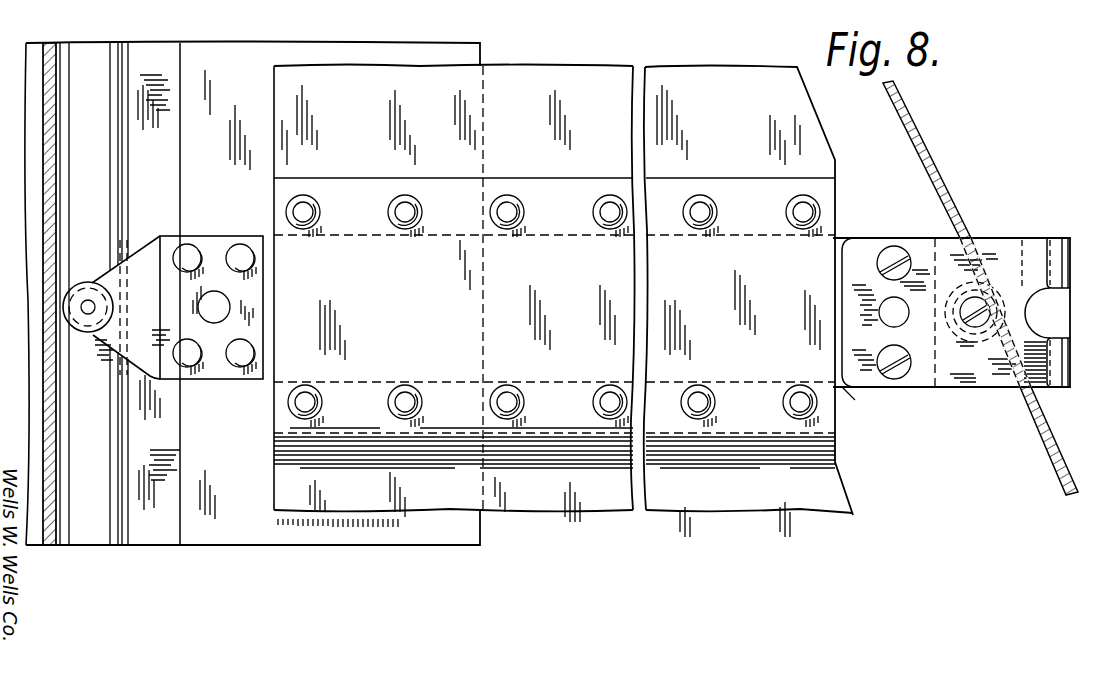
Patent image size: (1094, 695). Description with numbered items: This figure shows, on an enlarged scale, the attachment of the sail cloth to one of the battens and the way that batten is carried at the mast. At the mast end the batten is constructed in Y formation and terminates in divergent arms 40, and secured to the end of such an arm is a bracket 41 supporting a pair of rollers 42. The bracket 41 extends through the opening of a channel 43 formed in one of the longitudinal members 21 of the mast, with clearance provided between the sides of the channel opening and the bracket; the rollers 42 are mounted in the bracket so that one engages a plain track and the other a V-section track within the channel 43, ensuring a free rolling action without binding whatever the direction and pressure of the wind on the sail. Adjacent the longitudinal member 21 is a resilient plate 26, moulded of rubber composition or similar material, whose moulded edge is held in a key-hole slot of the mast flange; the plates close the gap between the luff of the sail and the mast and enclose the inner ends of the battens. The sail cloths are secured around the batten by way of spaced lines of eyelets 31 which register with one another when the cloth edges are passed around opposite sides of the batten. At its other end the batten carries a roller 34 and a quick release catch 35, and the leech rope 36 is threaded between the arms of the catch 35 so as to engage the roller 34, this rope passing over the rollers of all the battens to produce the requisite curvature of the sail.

The longitudinal member 21 is at (43, 488).
The plate 26 is at (486, 50).
The eyelets 31 is at (520, 203).
The roller 34 is at (958, 335).
The quick release catch 35 is at (1052, 288).
The leech rope 36 is at (923, 172).
The divergent arm 40 is at (951, 330).
The bracket 41 is at (146, 247).
The roller 42 is at (83, 283).
The channel 43 is at (63, 118).